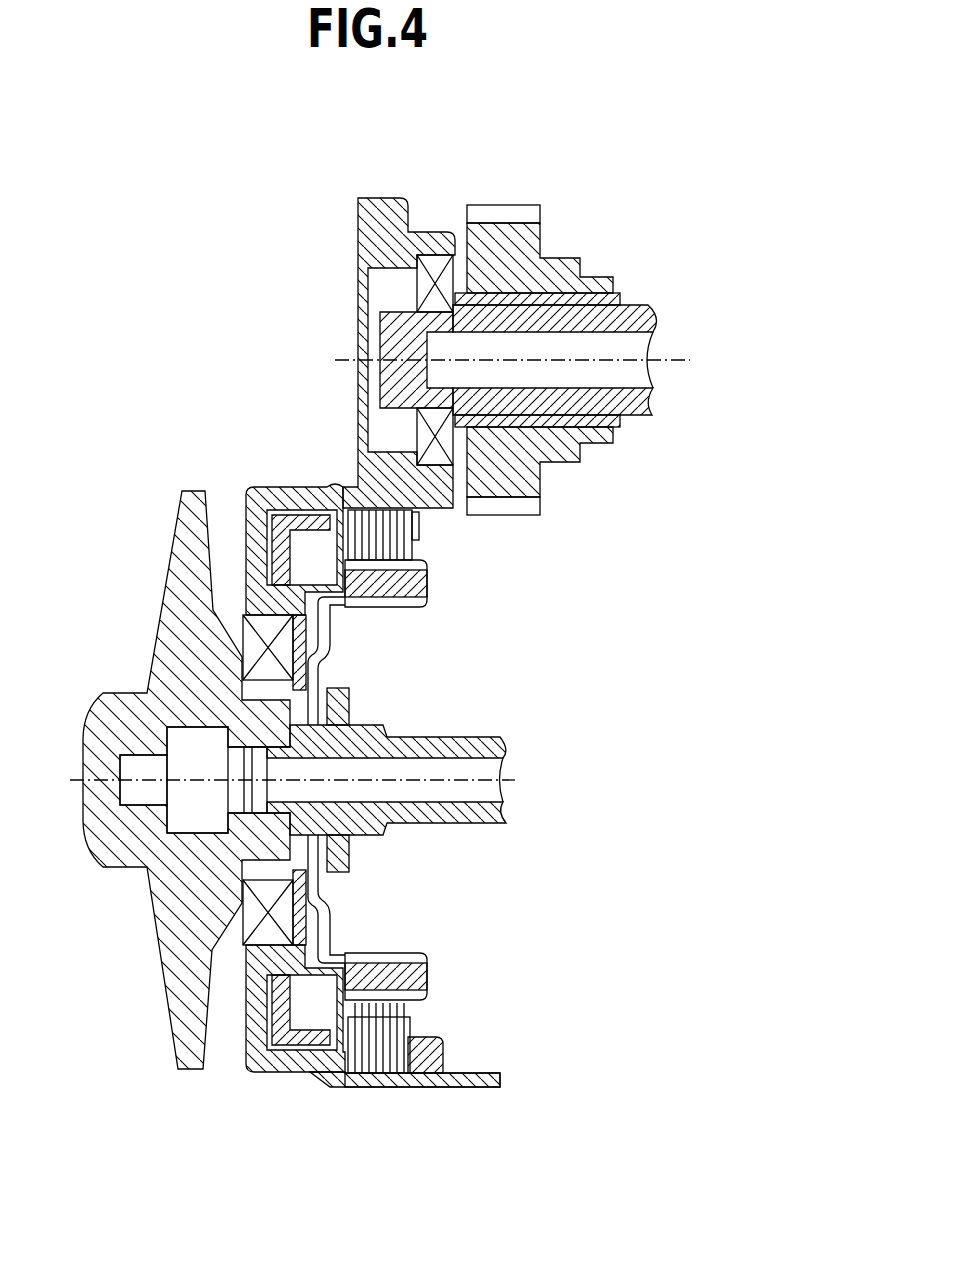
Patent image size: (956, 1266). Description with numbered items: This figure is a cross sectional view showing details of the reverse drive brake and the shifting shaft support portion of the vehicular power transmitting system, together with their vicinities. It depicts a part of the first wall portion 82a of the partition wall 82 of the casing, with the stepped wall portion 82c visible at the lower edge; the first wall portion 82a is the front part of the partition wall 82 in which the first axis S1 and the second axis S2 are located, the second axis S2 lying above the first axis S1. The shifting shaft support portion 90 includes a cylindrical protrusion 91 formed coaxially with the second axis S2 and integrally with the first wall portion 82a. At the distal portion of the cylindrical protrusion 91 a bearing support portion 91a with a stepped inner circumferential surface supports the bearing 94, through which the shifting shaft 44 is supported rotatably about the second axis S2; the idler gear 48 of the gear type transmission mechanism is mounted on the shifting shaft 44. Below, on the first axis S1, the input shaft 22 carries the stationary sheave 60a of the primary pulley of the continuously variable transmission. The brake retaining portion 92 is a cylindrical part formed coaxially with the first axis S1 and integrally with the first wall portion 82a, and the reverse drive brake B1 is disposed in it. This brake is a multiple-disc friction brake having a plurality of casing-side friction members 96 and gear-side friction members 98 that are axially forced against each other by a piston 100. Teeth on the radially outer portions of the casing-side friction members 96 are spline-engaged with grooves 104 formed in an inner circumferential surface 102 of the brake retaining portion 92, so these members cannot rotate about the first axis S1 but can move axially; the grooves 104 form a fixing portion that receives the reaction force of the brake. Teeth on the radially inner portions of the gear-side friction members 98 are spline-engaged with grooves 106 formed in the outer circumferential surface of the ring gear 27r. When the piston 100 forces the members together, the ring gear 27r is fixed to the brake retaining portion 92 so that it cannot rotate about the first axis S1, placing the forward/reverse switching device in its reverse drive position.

The partition wall 82 is at (400, 615).
The first wall portion 82a is at (383, 199).
The stepped wall portion 82c is at (480, 1083).
The shifting shaft support portion 90 is at (369, 322).
The cylindrical protrusion 91 is at (430, 243).
The bearing support portion 91a is at (417, 286).
The bearing 94 is at (417, 432).
The shifting shaft 44 is at (623, 316).
The idler gear 48 is at (500, 219).
The second axis S2 is at (493, 360).
The brake retaining portion 92 is at (283, 496).
The reverse drive brake B1 is at (402, 617).
The gear-side friction members 98 is at (365, 600).
The grooves 106 is at (428, 565).
The ring gear 27r is at (404, 977).
The casing-side friction members 96 is at (355, 1087).
The inner circumferential surface 102 is at (430, 1050).
The grooves 104 is at (452, 1089).
The piston 100 is at (273, 1060).
The stationary sheave 60a is at (178, 594).
The input shaft 22 is at (486, 750).
The first axis S1 is at (275, 782).